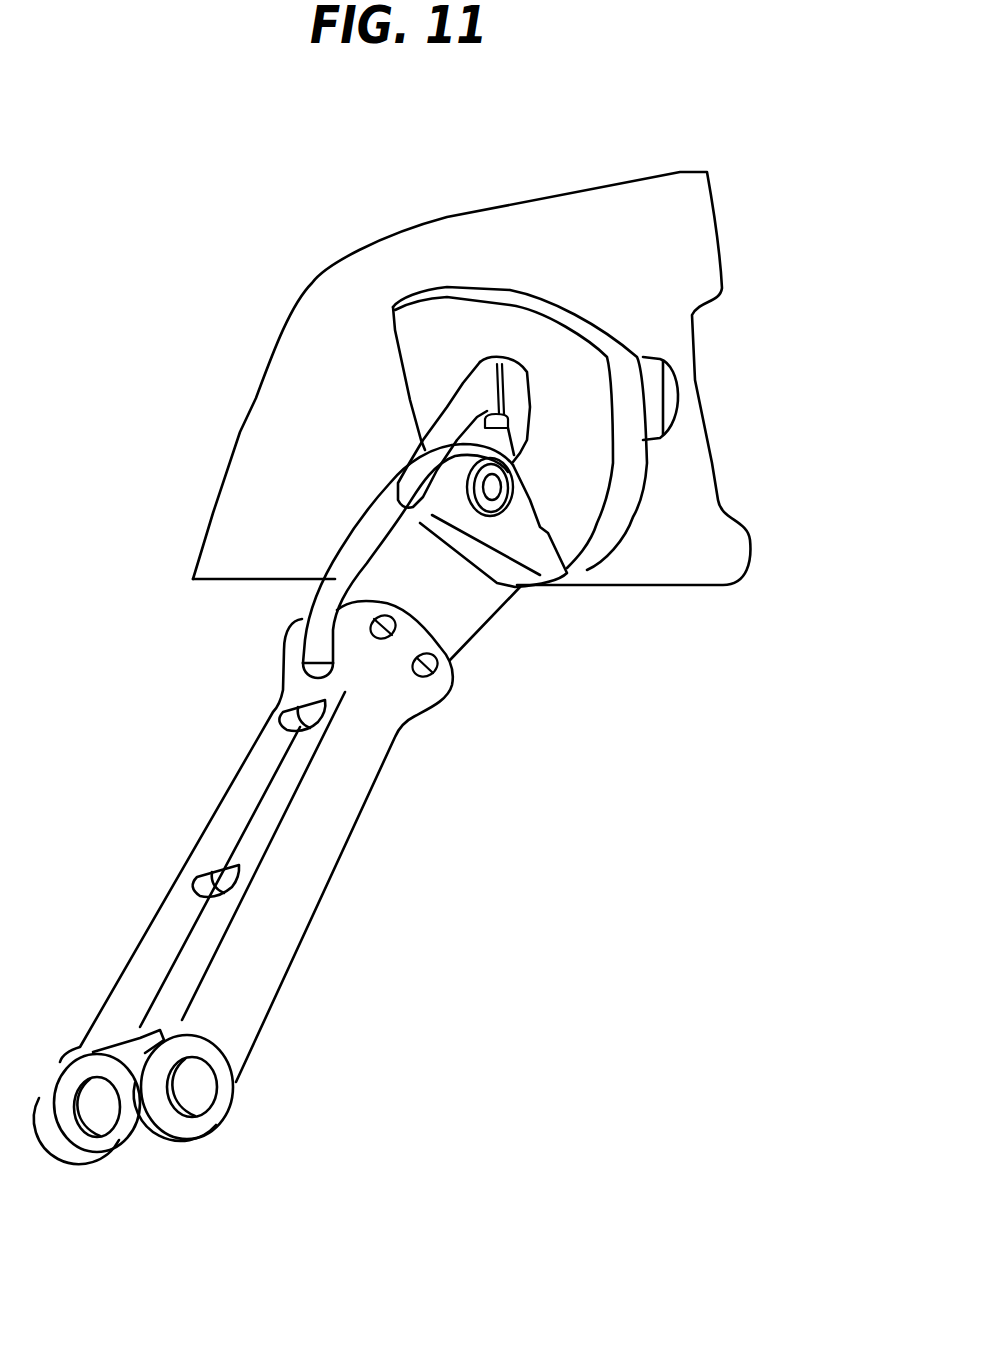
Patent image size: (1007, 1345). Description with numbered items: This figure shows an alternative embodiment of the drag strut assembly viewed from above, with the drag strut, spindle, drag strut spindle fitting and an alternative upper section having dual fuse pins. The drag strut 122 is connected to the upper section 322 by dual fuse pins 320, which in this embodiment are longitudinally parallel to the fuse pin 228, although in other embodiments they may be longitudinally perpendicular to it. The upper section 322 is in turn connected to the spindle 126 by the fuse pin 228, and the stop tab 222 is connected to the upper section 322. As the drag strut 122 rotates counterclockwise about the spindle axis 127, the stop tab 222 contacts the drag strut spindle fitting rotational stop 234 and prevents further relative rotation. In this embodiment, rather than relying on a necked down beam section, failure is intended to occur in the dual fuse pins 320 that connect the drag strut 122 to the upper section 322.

The drag strut 122 is at (466, 1090).
The spindle 126 is at (513, 363).
The spindle axis 127 is at (680, 391).
The stop tab 222 is at (558, 568).
The fuse pin 228 is at (497, 485).
The drag strut spindle fitting rotational stop 234 is at (597, 530).
The dual fuse pins 320 is at (427, 652).
The upper section 322 is at (385, 520).